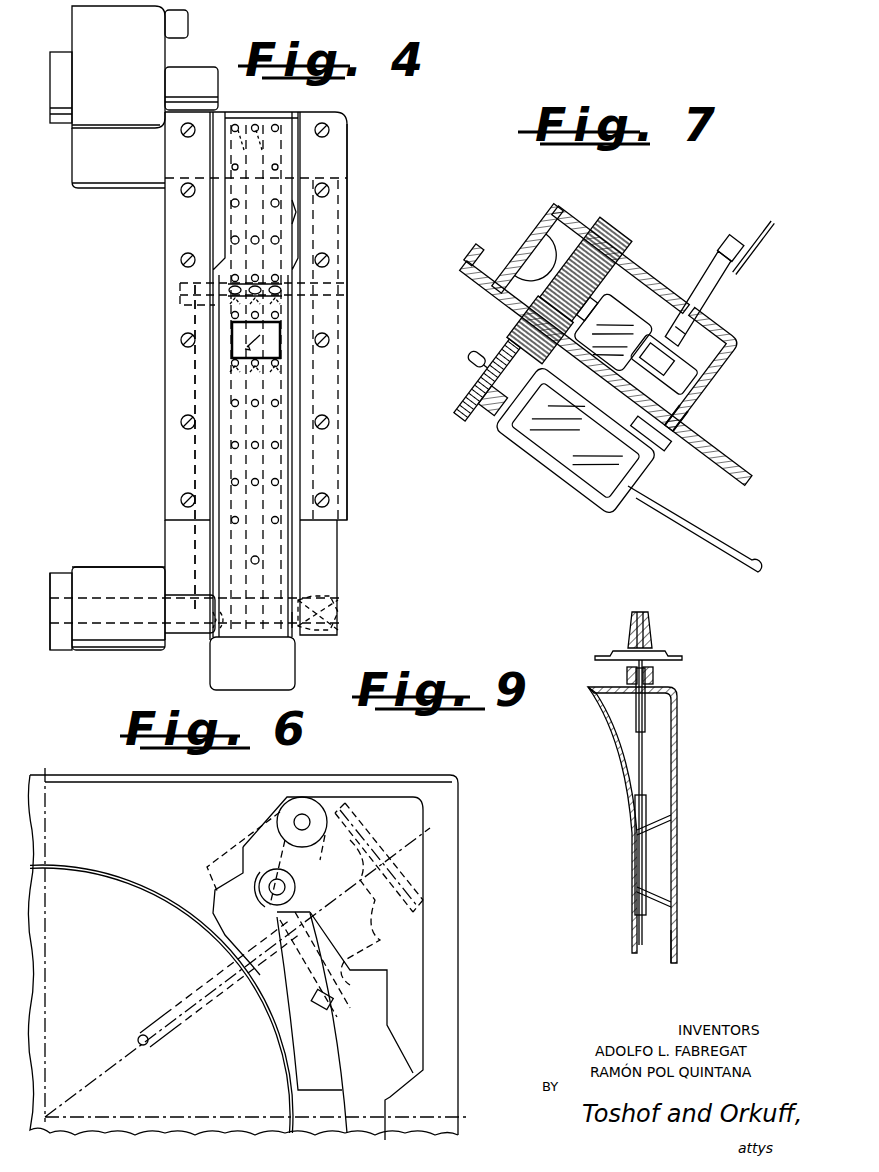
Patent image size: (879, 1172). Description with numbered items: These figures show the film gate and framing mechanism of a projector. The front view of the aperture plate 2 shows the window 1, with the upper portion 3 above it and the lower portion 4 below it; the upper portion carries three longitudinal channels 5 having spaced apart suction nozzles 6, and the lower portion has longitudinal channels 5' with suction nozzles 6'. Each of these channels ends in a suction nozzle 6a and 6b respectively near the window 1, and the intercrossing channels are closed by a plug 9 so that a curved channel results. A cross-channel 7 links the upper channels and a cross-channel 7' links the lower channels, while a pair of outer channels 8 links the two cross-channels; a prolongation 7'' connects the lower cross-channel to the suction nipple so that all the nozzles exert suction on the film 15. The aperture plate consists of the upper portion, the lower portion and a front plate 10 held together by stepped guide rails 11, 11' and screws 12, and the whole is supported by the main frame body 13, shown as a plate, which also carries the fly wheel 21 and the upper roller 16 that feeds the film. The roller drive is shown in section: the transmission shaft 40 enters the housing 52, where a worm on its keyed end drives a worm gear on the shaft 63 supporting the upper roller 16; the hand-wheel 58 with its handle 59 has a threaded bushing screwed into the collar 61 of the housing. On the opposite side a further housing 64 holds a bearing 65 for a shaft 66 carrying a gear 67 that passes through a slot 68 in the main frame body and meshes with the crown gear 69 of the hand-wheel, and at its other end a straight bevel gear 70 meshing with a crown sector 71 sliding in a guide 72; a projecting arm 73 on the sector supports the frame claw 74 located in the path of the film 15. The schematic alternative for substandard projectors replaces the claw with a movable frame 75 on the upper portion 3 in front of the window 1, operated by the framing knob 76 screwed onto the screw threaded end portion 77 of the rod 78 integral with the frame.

In FIG. 9, the window 1 is at (652, 888).
In FIG. 9, the aperture plate 2 is at (677, 932).
In FIG. 4, the upper portion 3 is at (282, 113).
In FIG. 6, the upper portion 3 is at (388, 1035).
In FIG. 9, the upper portion 3 is at (678, 772).
In FIG. 4, the lower portion 4 is at (232, 696).
In FIG. 4, the longitudinal channels 5 is at (250, 115).
In FIG. 4, the longitudinal channels 5' is at (199, 642).
In FIG. 4, the suction nozzles 6 is at (299, 324).
In FIG. 4, the suction nozzles 6' is at (306, 548).
In FIG. 4, the suction nozzle 6a is at (275, 316).
In FIG. 4, the suction nozzle 6b is at (236, 366).
In FIG. 4, the cross-channel 7 is at (237, 290).
In FIG. 4, the cross-channel 7' is at (311, 640).
In FIG. 4, the prolongation 7'' is at (81, 623).
In FIG. 4, the outer channels 8 is at (197, 542).
In FIG. 4, the plug 9 is at (125, 632).
In FIG. 4, the front plate 10 is at (333, 167).
In FIG. 6, the front plate 10 is at (340, 1078).
In FIG. 9, the front plate 10 is at (614, 748).
In FIG. 4, the stepped guide rails 11 is at (302, 288).
In FIG. 4, the upper slot 11' is at (337, 201).
In FIG. 4, the screws 12 is at (333, 258).
In FIG. 7, the main frame body 13 is at (722, 456).
In FIG. 6, the main frame body 13 is at (405, 782).
In FIG. 9, the main frame body 13 is at (690, 655).
In FIG. 7, the film 15 is at (766, 248).
In FIG. 6, the upper roller 16 is at (300, 870).
In FIG. 6, the fly wheel 21 is at (100, 878).
In FIG. 7, the transmission shaft 40 is at (694, 514).
In FIG. 6, the transmission shaft 40 is at (165, 1035).
In FIG. 7, the housing 52 is at (652, 440).
In FIG. 7, the hand-wheel 58 is at (466, 408).
In FIG. 6, the hand-wheel 58 is at (370, 812).
In FIG. 7, the handle 59 is at (475, 363).
In FIG. 7, the collar 61 is at (515, 440).
In FIG. 6, the shaft 63 is at (296, 884).
In FIG. 7, the housing 64 is at (572, 212).
In FIG. 7, the bearing 65 is at (622, 298).
In FIG. 7, the shaft 66 is at (622, 252).
In FIG. 7, the gear 67 is at (540, 265).
In FIG. 7, the slot 68 is at (520, 320).
In FIG. 7, the crown gear 69 is at (492, 418).
In FIG. 7, the straight bevel gear 70 is at (714, 372).
In FIG. 7, the crown sector 71 is at (726, 330).
In FIG. 6, the crown sector 71 is at (340, 1020).
In FIG. 7, the guide 72 is at (696, 411).
In FIG. 7, the projecting arm 73 is at (706, 290).
In FIG. 7, the frame claw 74 is at (745, 256).
In FIG. 6, the frame claw 74 is at (318, 1008).
In FIG. 9, the movable frame 75 is at (652, 835).
In FIG. 9, the framing knob 76 is at (652, 630).
In FIG. 9, the screw threaded end portion 77 is at (660, 671).
In FIG. 9, the rod 78 is at (645, 750).